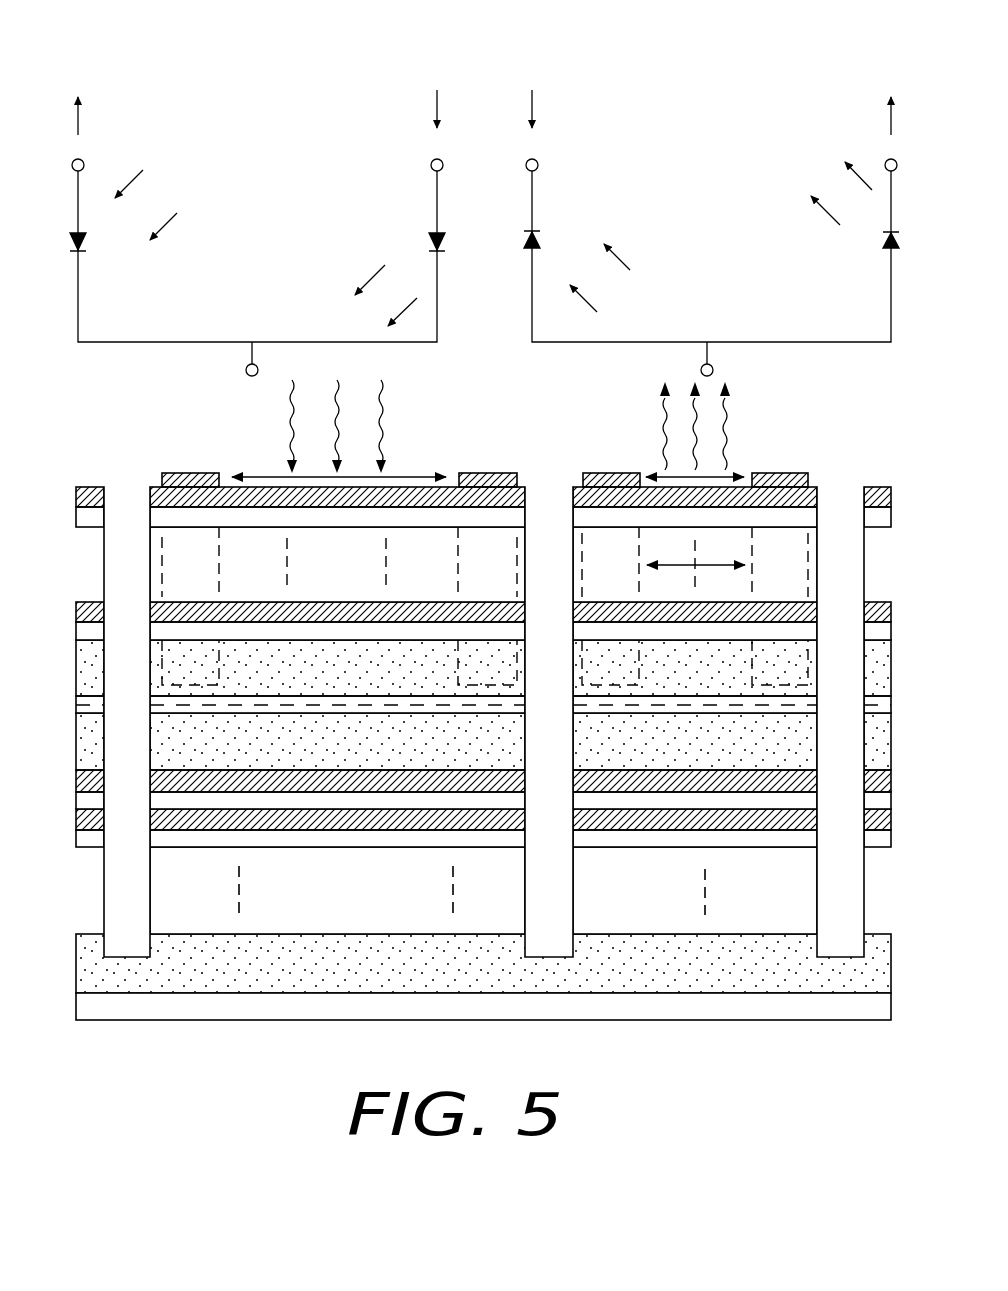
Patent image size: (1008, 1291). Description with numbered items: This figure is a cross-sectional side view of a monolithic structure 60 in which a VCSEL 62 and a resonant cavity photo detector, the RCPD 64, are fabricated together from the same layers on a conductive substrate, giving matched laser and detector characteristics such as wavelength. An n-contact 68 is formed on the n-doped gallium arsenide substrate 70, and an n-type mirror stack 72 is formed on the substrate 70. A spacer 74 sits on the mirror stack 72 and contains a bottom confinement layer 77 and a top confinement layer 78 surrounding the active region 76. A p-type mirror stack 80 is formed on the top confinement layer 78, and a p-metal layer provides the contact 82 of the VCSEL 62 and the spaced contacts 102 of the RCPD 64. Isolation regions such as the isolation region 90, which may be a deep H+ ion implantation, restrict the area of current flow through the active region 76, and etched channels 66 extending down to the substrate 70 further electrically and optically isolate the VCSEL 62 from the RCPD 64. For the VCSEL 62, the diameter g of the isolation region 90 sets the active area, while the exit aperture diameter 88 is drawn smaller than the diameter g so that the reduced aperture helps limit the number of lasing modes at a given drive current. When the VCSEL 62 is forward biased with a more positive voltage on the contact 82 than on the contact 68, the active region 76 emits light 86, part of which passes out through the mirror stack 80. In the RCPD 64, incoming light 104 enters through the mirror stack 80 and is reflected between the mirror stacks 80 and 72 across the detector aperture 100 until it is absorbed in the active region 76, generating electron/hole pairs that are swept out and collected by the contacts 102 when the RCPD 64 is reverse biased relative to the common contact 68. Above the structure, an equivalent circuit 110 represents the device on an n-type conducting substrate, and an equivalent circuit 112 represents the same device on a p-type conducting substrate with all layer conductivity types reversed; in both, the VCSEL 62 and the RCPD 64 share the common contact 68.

The VCSEL and RCPD structure 60 is at (818, 414).
The VCSEL 62 is at (432, 241).
The RCPD 64 is at (84, 244).
The etched channel 66 is at (543, 948).
The n-contact 68 is at (768, 1011).
The conductive substrate layer 70 is at (90, 970).
The n-type mirror stack 72 is at (75, 785).
The spacer 74 is at (474, 705).
The active region 76 is at (883, 722).
The bottom confinement layer 77 is at (883, 755).
The top confinement layer 78 is at (883, 683).
The p-type mirror stack 80 is at (75, 510).
The p-metal contact layer 82 is at (782, 475).
The emitted light 86 is at (731, 450).
The exit aperture diameter 88 is at (737, 473).
The isolation region 90 is at (178, 570).
The detector aperture 100 is at (411, 474).
The p-metal contact layer 102 is at (188, 473).
The incident light 104 is at (388, 422).
The equivalent circuit for n-type conducting substrate 110 is at (347, 112).
The equivalent circuit for p-type conducting substrate 112 is at (584, 58).
The isolation region diameter g is at (792, 589).